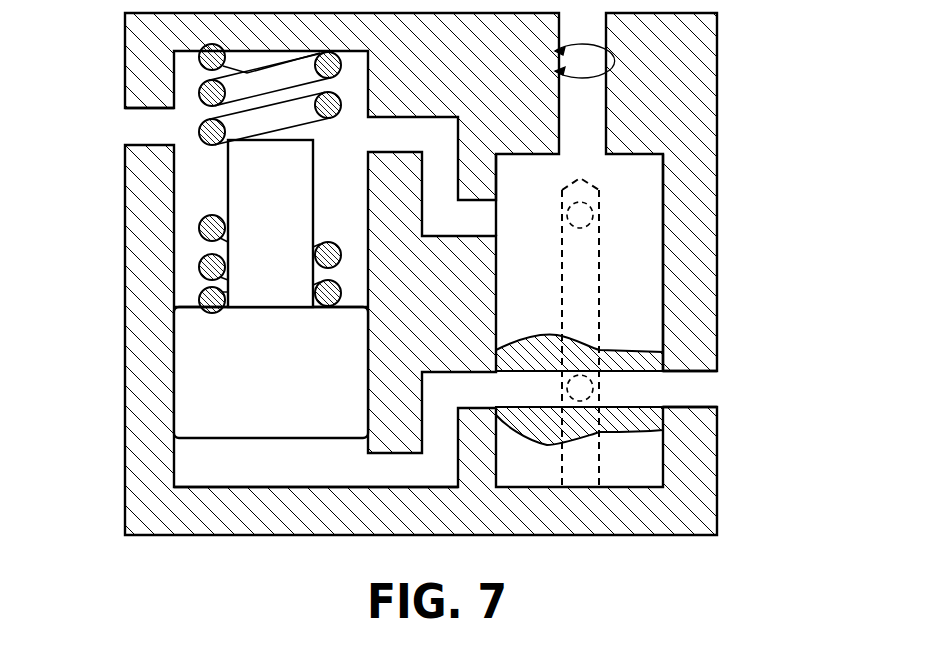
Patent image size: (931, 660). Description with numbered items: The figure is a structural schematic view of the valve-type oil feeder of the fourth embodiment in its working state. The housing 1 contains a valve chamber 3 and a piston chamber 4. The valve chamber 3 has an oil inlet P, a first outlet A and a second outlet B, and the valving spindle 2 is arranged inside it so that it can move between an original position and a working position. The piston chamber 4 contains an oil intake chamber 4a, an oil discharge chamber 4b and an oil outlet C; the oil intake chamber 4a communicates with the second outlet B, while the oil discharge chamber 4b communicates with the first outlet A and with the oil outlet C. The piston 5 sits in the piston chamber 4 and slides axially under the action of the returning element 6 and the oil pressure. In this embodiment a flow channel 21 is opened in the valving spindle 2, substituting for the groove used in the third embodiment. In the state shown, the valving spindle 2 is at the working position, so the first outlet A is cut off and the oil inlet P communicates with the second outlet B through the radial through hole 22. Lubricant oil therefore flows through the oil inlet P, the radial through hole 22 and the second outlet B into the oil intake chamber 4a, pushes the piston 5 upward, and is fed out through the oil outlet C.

The housing 1 is at (622, 138).
The valving spindle 2 is at (623, 202).
The valve chamber 3 is at (663, 258).
The piston chamber 4 is at (175, 370).
The oil intake chamber 4a is at (198, 462).
The oil discharge chamber 4b is at (200, 232).
The piston 5 is at (238, 177).
The returning element 6 is at (200, 83).
The flow channel 21 is at (600, 303).
The radial through hole 22 is at (632, 397).
The first outlet A is at (485, 223).
The second outlet B is at (483, 387).
The oil outlet C is at (143, 122).
The oil inlet P is at (703, 395).